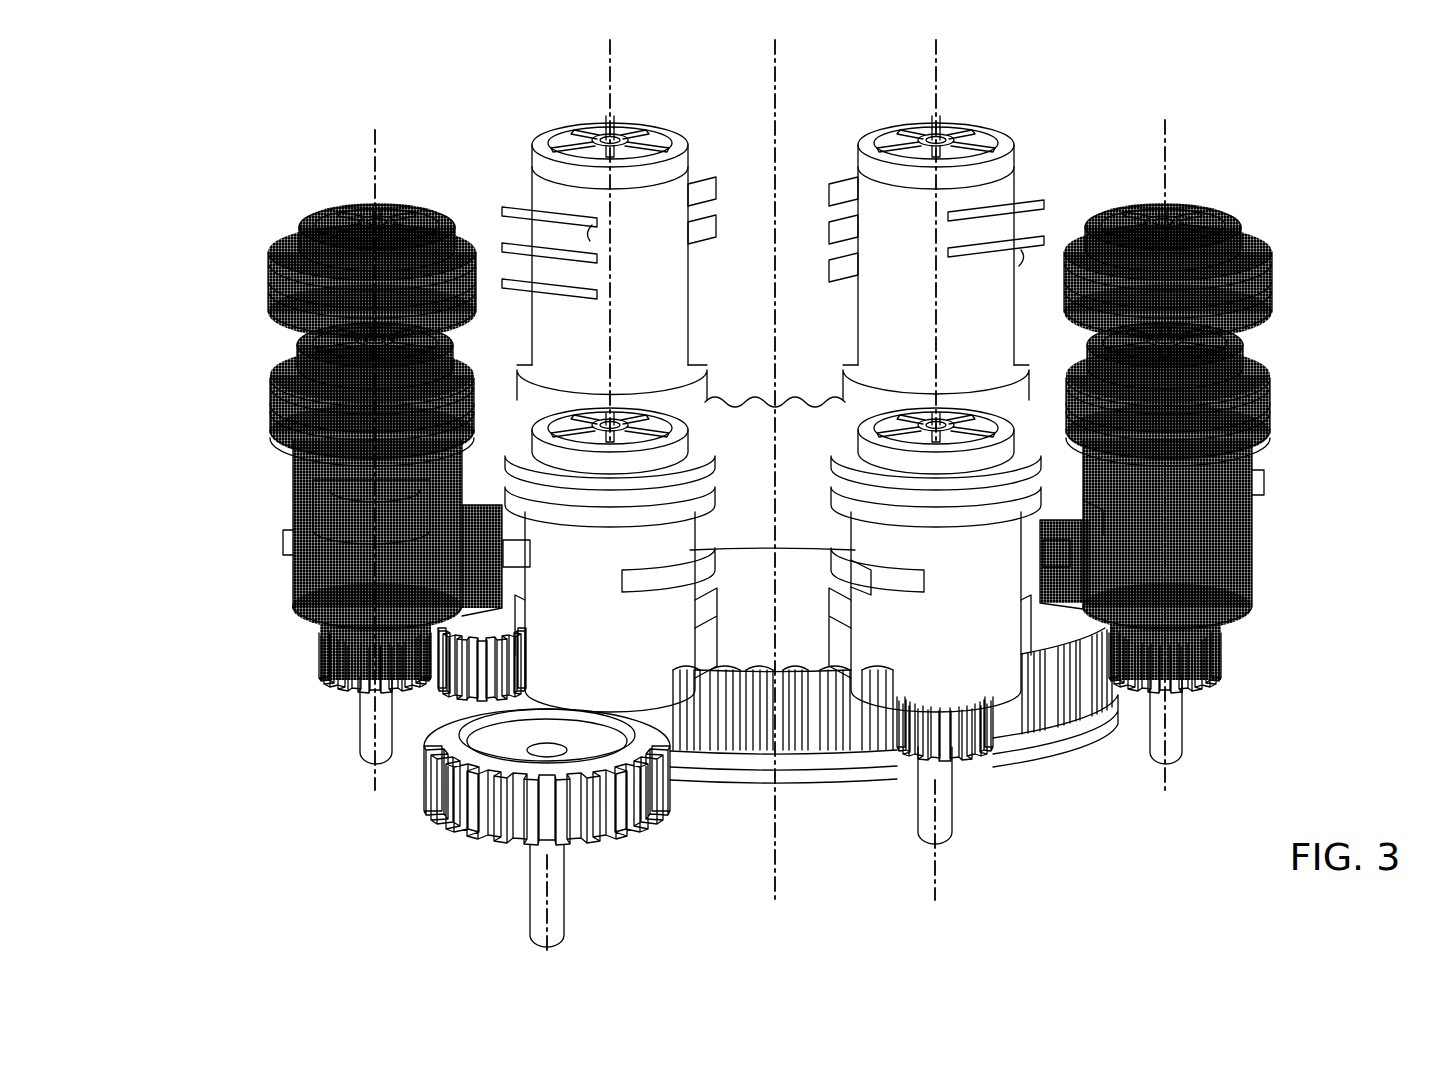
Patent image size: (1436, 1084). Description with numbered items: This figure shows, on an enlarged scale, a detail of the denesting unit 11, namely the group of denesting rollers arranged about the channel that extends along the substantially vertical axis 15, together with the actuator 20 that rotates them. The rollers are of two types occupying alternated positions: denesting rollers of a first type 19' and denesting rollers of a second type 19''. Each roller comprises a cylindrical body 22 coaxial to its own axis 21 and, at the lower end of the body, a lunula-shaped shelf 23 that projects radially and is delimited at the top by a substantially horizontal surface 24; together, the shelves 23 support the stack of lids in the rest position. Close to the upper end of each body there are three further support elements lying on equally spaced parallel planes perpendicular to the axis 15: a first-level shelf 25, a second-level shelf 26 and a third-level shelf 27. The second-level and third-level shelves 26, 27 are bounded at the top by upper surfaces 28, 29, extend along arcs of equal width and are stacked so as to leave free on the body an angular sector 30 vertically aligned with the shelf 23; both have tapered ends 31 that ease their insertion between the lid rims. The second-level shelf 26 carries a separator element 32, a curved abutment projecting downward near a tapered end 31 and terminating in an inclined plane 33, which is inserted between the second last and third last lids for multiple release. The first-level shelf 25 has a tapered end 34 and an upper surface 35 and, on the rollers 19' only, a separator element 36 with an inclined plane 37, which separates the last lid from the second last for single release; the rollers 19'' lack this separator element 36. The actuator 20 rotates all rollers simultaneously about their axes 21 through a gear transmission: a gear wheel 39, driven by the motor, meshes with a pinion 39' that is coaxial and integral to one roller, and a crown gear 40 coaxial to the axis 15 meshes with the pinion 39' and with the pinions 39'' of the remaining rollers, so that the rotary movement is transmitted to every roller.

The denesting unit 11 is at (1268, 130).
The vertical axis 15 is at (777, 102).
The denesting roller of a first type 19' is at (755, 441).
The denesting roller of a second type 19'' is at (748, 444).
The actuator 20 is at (524, 828).
The axis 21 is at (376, 138).
The cylindrical body 22 is at (999, 636).
The shelf 23 is at (715, 385).
The substantially horizontal surface 24 is at (698, 372).
The first-level shelf 25 is at (505, 268).
The second-level shelf 26 is at (705, 238).
The third-level shelf 27 is at (690, 200).
The upper surface 28 is at (1037, 228).
The upper surface 29 is at (1012, 160).
The angular sector 30 is at (665, 220).
The tapered end 31 is at (592, 232).
The separator element 32 is at (530, 572).
The inclined plane 33 is at (836, 542).
The tapered end 34 is at (562, 292).
The upper surface 35 is at (348, 478).
The separator element 36 is at (320, 530).
The inclined plane 37 is at (438, 540).
The gear wheel 39 is at (524, 792).
The pinion 39' is at (885, 751).
The pinion 39'' is at (1108, 750).
The crown gear 40 is at (1080, 722).